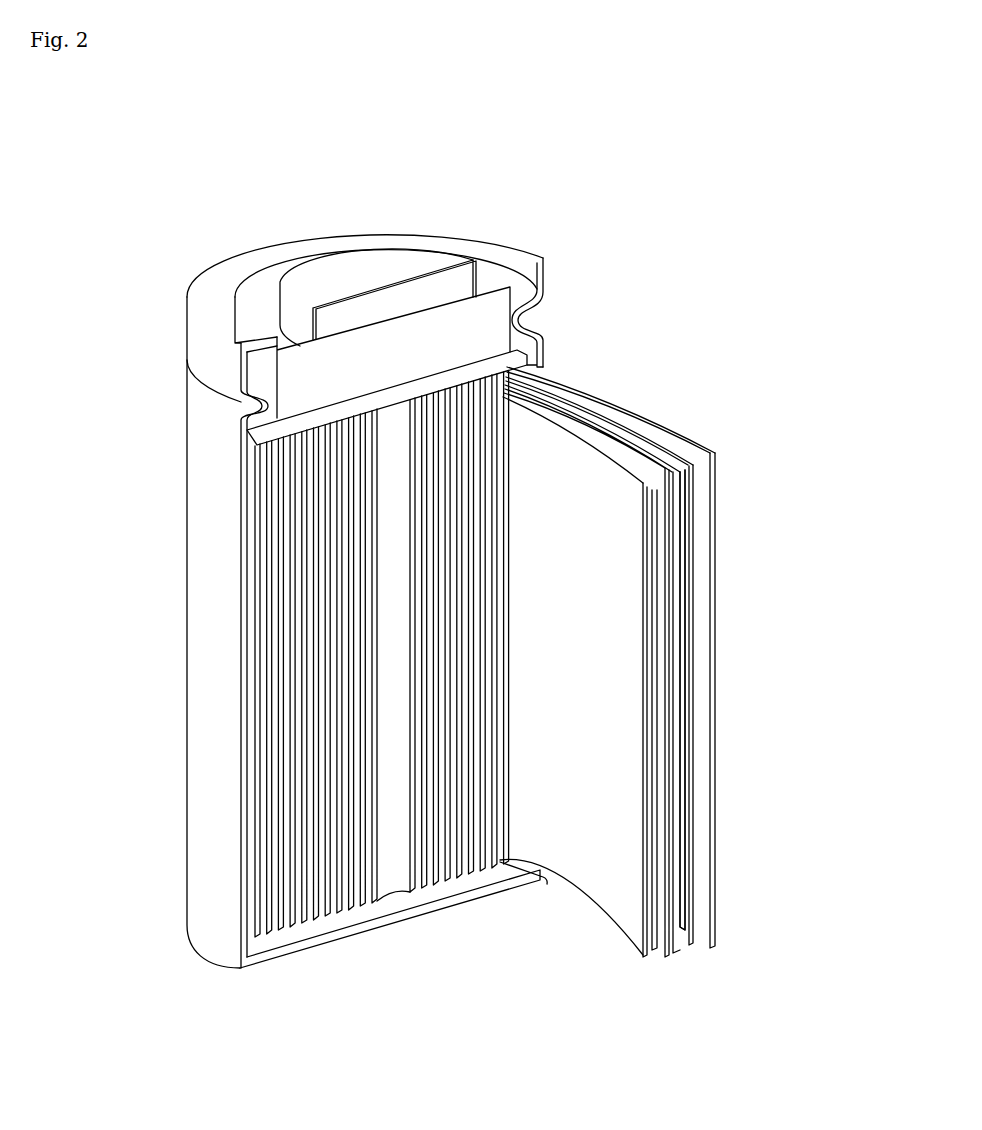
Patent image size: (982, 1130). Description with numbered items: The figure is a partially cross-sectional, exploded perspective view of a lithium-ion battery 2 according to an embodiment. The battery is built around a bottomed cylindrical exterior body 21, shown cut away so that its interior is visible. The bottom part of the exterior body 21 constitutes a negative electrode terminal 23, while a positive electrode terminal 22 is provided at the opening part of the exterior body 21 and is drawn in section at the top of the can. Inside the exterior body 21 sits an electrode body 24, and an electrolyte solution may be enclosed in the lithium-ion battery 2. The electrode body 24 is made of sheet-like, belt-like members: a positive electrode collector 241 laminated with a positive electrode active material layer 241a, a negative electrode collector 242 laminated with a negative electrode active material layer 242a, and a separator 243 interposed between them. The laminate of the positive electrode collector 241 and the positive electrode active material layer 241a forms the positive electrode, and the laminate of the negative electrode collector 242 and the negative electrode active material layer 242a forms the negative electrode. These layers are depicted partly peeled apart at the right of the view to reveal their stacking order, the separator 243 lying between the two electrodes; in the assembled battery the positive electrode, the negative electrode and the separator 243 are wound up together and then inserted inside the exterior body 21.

The lithium-ion battery 2 is at (590, 168).
The exterior body 21 is at (187, 684).
The positive electrode terminal 22 is at (362, 256).
The negative electrode terminal 23 is at (392, 933).
The electrode body 24 is at (724, 963).
The positive electrode collector 241 is at (628, 925).
The positive electrode active material layer 241a is at (660, 620).
The negative electrode collector 242 is at (688, 448).
The negative electrode active material layer 242a is at (688, 680).
The separator 243 is at (622, 432).